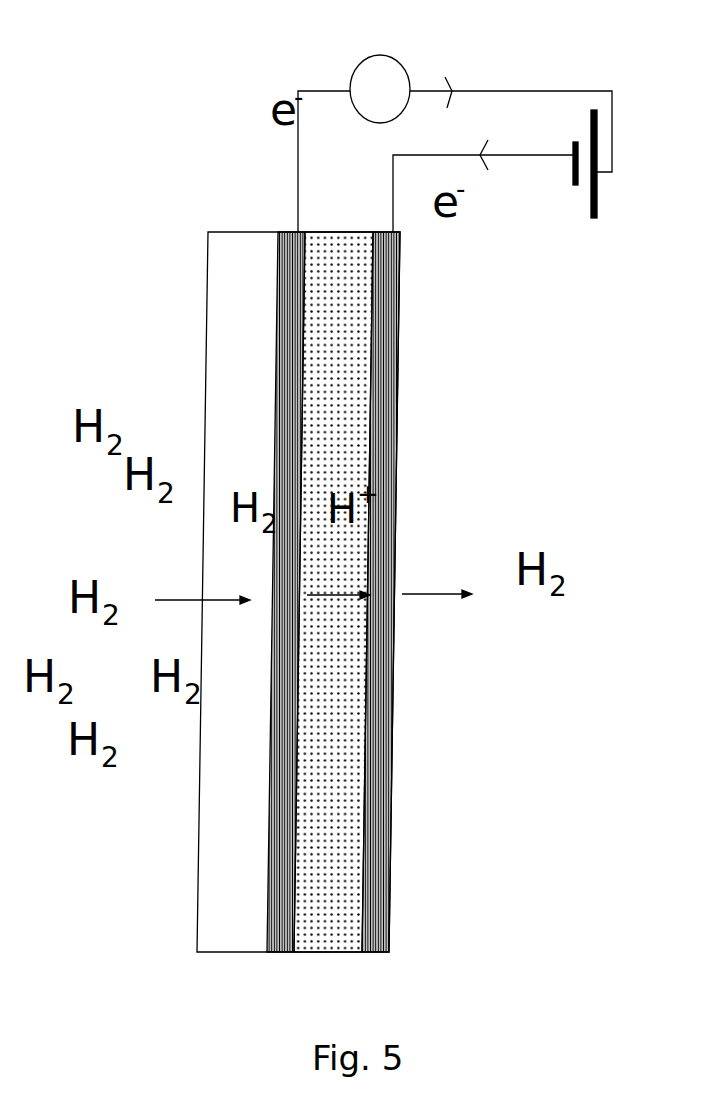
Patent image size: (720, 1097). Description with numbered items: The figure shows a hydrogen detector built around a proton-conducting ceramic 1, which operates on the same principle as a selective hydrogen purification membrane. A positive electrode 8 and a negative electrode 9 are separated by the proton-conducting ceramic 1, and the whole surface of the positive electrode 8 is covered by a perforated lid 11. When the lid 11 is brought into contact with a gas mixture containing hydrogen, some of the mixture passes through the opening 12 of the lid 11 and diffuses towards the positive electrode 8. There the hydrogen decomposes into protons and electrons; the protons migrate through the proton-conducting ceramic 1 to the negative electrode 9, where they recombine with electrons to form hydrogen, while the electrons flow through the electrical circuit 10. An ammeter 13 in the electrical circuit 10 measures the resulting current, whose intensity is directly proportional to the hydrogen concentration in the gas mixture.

The proton-conducting ceramic 1 is at (337, 788).
The positive electrode 8 is at (282, 888).
The negative electrode 9 is at (378, 877).
The electrical circuit 10 is at (580, 92).
The perforated lid 11 is at (195, 933).
The opening 12 is at (200, 588).
The ammeter 13 is at (405, 68).